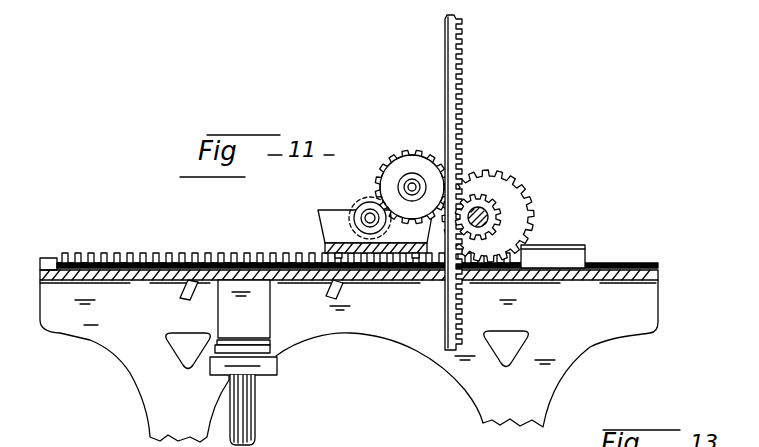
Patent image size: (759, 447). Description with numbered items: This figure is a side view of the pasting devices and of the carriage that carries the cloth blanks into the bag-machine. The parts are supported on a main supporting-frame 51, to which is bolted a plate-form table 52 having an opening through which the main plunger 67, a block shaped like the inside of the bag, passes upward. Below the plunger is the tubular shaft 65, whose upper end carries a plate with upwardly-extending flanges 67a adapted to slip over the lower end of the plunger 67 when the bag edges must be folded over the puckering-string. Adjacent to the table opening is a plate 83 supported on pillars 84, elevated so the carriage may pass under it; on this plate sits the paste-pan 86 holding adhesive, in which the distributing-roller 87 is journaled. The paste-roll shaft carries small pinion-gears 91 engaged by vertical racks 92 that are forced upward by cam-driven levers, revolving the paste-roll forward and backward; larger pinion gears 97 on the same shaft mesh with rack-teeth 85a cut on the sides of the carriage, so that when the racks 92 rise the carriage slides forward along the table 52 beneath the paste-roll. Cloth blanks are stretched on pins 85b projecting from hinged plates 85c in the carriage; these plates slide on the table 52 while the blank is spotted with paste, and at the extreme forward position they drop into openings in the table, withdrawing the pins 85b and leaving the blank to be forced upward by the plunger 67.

The main supporting-frame 51 is at (349, 361).
The table 52 is at (658, 278).
The tubular shaft 65 is at (250, 416).
The main plunger 67 is at (242, 316).
The flanges 67a is at (277, 367).
The plate 83 is at (334, 239).
The pillars 84 is at (331, 249).
The rack-teeth 85a is at (128, 244).
The pins 85b is at (181, 285).
The hinged plates 85c is at (187, 303).
The paste-pan 86 is at (384, 218).
The distributing-roller 87 is at (363, 199).
The pinion-gears 91 is at (497, 213).
The vertical racks 92 is at (451, 90).
The pinion gears 97 is at (505, 186).